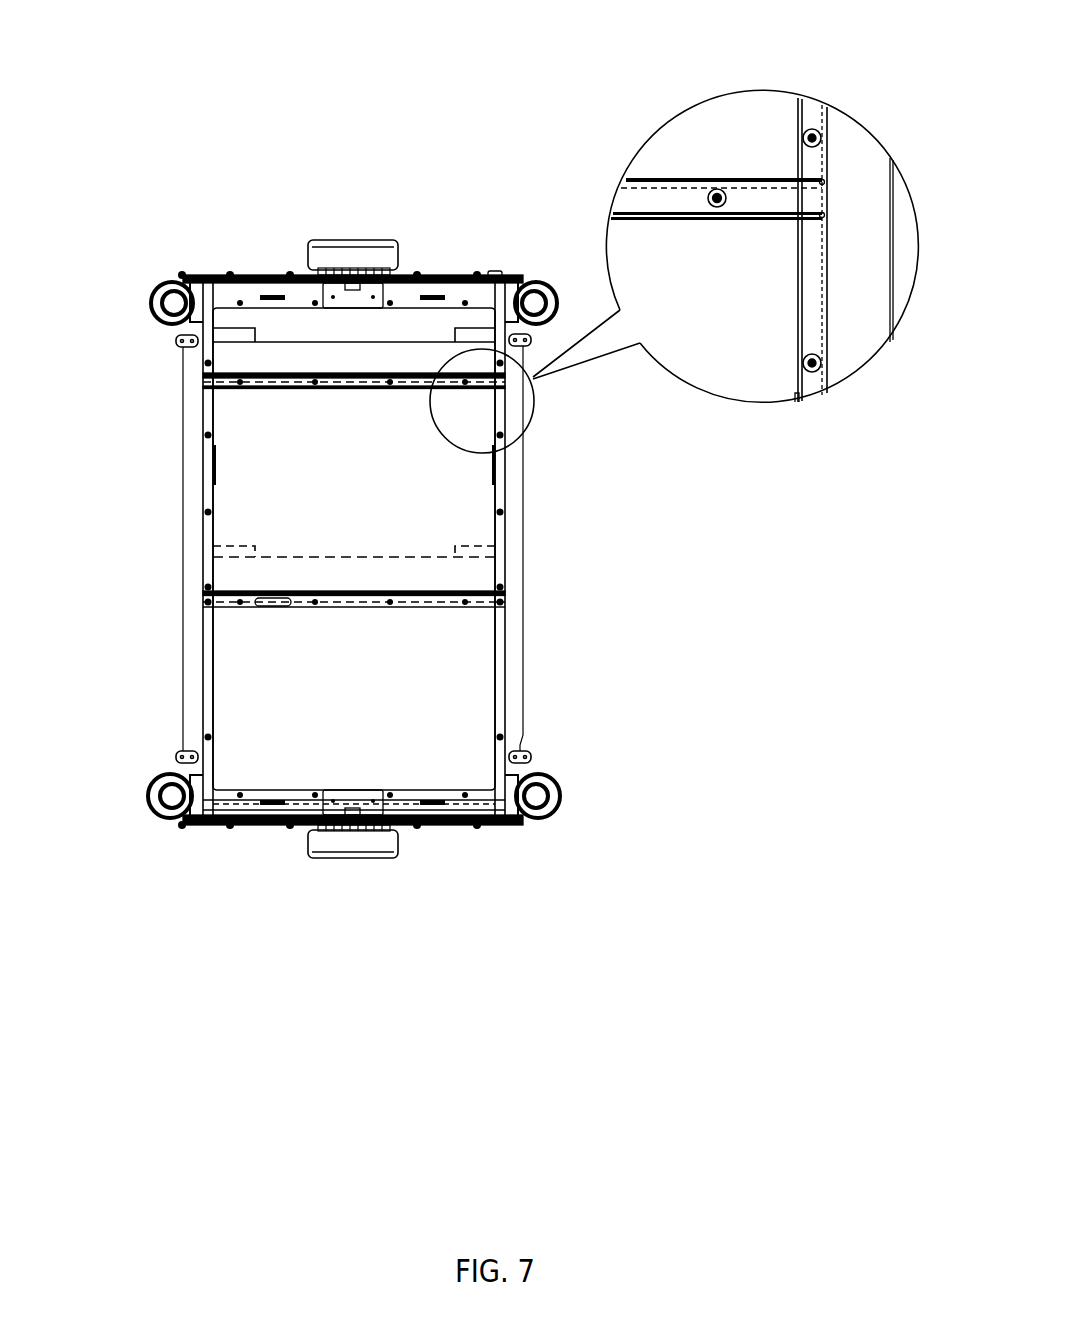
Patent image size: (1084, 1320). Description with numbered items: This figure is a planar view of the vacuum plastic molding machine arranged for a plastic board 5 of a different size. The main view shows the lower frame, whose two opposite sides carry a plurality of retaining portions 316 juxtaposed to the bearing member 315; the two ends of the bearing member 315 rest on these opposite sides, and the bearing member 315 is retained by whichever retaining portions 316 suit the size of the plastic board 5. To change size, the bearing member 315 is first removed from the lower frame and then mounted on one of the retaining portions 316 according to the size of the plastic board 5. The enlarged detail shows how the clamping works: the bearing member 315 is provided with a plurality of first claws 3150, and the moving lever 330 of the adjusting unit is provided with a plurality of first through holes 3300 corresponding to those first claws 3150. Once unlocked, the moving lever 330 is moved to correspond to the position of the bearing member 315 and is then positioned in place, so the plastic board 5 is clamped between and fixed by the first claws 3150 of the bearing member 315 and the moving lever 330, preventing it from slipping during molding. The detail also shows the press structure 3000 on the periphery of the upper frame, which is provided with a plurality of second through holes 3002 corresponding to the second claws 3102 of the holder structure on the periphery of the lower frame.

The plastic board 5 is at (827, 333).
The bearing member 315 is at (423, 357).
The retaining portions 316 is at (217, 331).
The moving lever 330 is at (625, 203).
The press structure 3000 is at (808, 240).
The second through holes 3002 is at (803, 367).
The second claws 3102 is at (812, 370).
The first claws 3150 is at (710, 208).
The first through holes 3300 is at (707, 195).